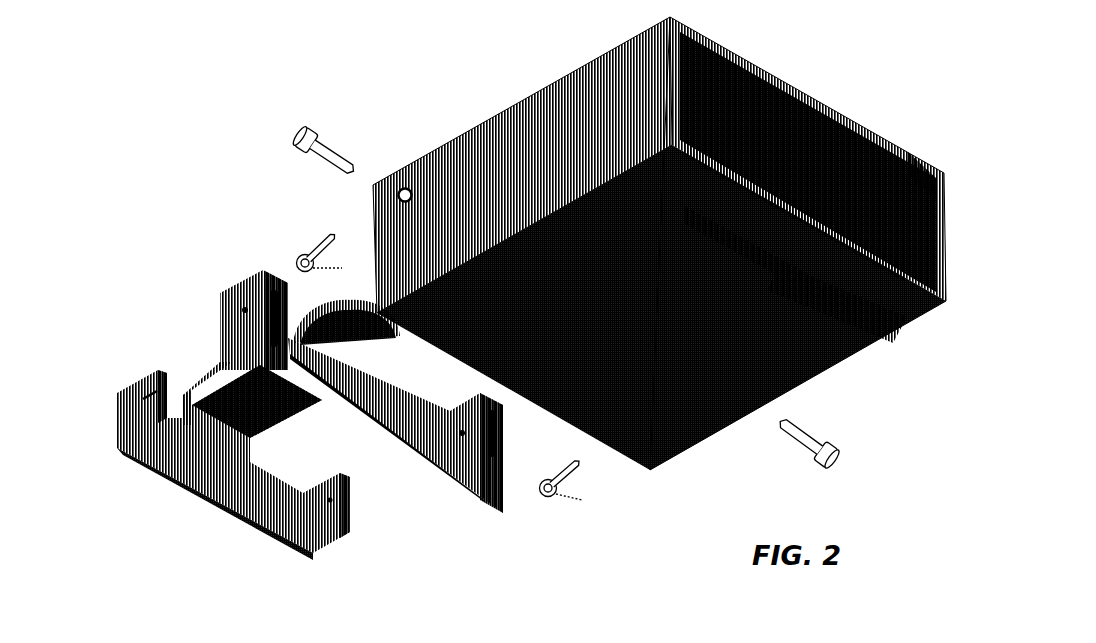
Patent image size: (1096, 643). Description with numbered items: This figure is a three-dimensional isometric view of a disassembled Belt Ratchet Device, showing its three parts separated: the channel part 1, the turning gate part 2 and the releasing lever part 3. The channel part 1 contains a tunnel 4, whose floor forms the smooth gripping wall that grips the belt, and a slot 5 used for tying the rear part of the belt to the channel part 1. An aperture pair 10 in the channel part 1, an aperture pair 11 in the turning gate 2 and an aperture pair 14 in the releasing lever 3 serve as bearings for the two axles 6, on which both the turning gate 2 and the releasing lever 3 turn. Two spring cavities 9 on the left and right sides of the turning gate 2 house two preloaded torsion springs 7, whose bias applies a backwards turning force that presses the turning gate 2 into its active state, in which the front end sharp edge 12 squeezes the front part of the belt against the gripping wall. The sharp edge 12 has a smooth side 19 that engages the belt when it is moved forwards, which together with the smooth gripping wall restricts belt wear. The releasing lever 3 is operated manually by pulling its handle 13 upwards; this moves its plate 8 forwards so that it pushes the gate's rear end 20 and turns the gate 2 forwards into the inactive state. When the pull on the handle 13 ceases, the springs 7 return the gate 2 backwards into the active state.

The channel part 1 is at (548, 132).
The turning gate part 2 is at (250, 288).
The releasing lever part 3 is at (233, 447).
The tunnel 4 is at (790, 157).
The slot 5 is at (826, 288).
The axles 6 is at (330, 147).
The torsion springs 7 is at (312, 252).
The plate 8 is at (195, 483).
The spring cavities 9 is at (280, 310).
The aperture pair 10 is at (404, 191).
The aperture pair 11 is at (245, 310).
The front end sharp edge 12 is at (385, 447).
The handle 13 is at (240, 398).
The aperture pair 14 is at (120, 408).
The smooth side 19 is at (338, 423).
The gate's rear end 20 is at (220, 343).